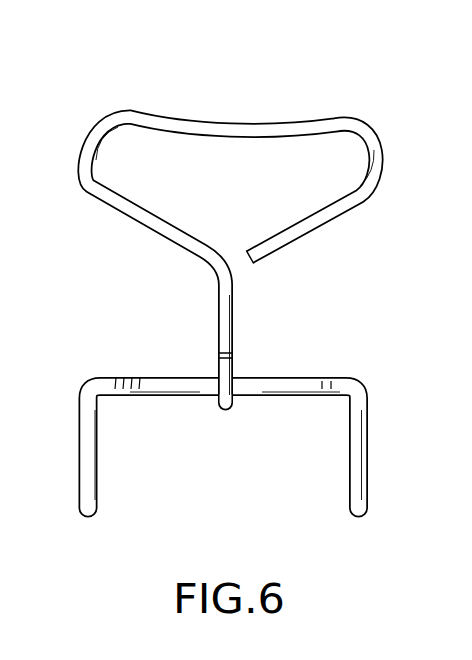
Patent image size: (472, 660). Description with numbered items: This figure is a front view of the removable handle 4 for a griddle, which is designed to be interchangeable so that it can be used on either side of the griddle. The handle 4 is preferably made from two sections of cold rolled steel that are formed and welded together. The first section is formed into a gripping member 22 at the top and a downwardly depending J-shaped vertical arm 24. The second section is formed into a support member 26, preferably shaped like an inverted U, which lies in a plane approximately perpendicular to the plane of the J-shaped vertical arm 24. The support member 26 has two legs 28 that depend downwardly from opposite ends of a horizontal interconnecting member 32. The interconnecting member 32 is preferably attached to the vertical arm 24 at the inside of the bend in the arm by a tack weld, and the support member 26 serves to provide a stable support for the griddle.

The removable handle 4 is at (219, 279).
The gripping member 22 is at (340, 117).
The J-shaped vertical arm 24 is at (237, 317).
The support member 26 is at (207, 434).
The legs 28 is at (98, 485).
The horizontal interconnecting member 32 is at (298, 379).